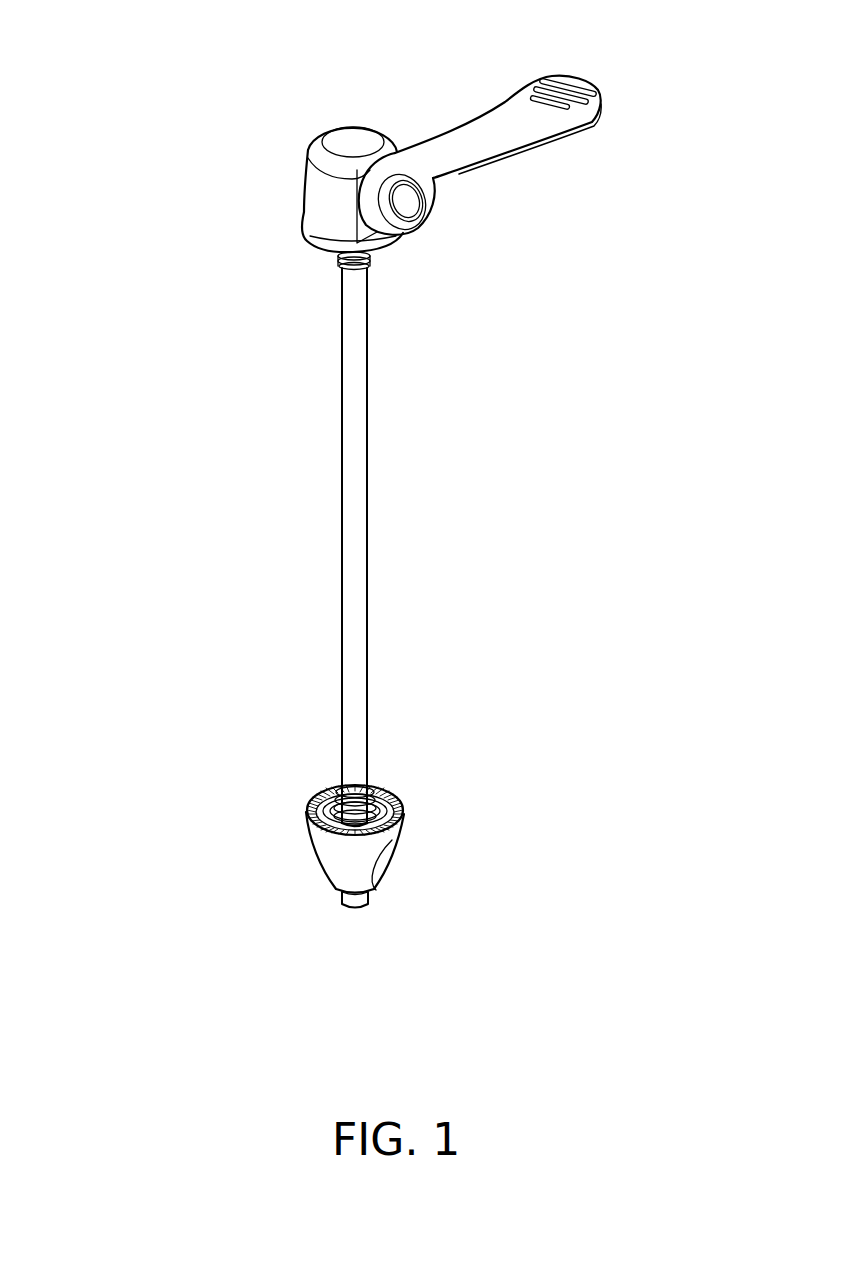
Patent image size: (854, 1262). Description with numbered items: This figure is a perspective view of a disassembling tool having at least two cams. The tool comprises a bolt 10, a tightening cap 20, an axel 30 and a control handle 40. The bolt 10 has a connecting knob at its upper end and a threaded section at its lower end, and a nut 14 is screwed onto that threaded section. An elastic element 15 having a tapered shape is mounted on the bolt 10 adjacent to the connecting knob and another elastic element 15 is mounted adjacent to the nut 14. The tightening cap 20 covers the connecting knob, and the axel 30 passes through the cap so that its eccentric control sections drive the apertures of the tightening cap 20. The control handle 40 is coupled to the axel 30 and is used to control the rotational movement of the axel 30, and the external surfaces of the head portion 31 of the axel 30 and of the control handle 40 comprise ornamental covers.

The bolt 10 is at (368, 418).
The nut 14 is at (380, 835).
The elastic element 15 is at (340, 258).
The tightening cap 20 is at (384, 120).
The axel 30 is at (301, 160).
The head portion 31 is at (410, 200).
The control handle 40 is at (523, 150).